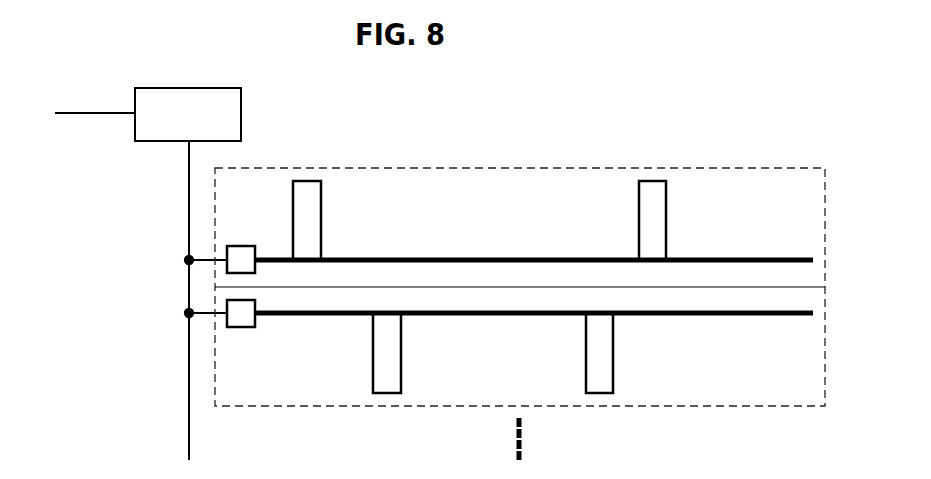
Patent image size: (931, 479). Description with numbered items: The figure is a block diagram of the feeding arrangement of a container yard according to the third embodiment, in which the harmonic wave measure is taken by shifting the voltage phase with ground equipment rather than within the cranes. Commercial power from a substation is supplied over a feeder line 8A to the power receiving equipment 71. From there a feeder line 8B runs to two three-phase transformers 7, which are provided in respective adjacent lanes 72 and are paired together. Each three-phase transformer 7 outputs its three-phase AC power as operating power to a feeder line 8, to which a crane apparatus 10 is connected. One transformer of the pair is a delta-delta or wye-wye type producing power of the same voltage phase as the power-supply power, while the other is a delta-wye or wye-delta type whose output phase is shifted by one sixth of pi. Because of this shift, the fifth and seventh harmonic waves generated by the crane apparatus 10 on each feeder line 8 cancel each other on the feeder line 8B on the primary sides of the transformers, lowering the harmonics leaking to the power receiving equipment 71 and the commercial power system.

The feeder line 8A is at (95, 112).
The power receiving equipment 71 is at (241, 113).
The feeder line 8B is at (187, 208).
The lane 72 is at (690, 168).
The three-phase transformer 7 is at (242, 245).
The feeder line 8 is at (521, 257).
The crane apparatus 10 is at (321, 207).